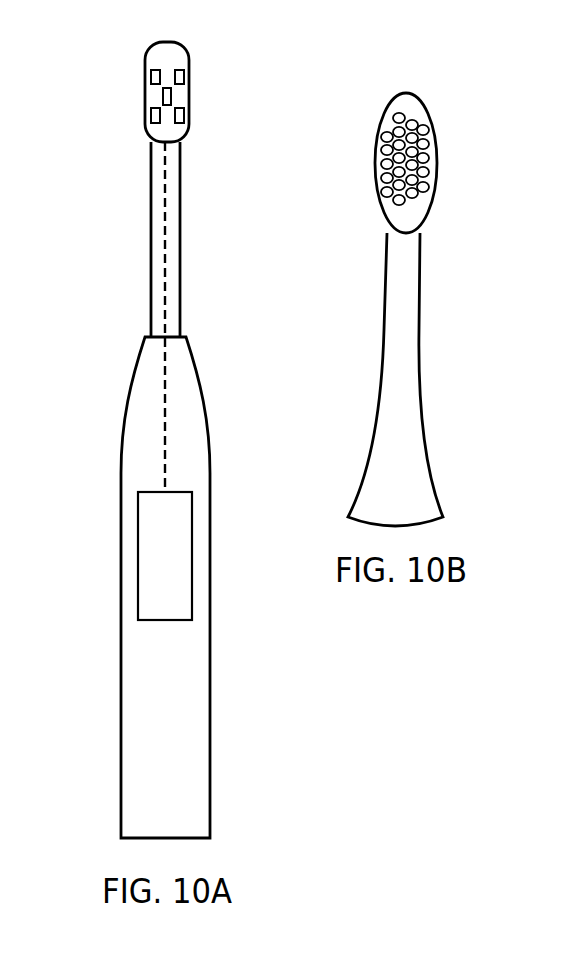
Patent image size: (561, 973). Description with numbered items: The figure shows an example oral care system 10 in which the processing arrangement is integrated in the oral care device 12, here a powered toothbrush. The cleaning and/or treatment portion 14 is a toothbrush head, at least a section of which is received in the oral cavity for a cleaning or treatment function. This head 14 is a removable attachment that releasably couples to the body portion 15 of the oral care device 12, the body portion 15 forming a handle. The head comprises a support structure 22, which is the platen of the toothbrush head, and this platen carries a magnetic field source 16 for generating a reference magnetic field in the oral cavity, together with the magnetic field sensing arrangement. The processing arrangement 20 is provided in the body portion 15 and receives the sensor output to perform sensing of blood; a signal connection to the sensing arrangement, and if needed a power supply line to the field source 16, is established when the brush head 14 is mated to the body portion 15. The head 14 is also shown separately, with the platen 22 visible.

In FIG. 10A, the oral care system 10 is at (52, 441).
In FIG. 10A, the oral care device 12 is at (88, 200).
In FIG. 10A, the cleaning and/or treatment portion 14 is at (212, 36).
In FIG. 10B, the cleaning and/or treatment portion 14 is at (445, 279).
In FIG. 10A, the body portion 15 is at (210, 680).
In FIG. 10A, the magnetic field source 16 is at (136, 56).
In FIG. 10A, the processing arrangement 20 is at (192, 555).
In FIG. 10A, the support structure 22 is at (137, 115).
In FIG. 10B, the support structure 22 is at (423, 112).